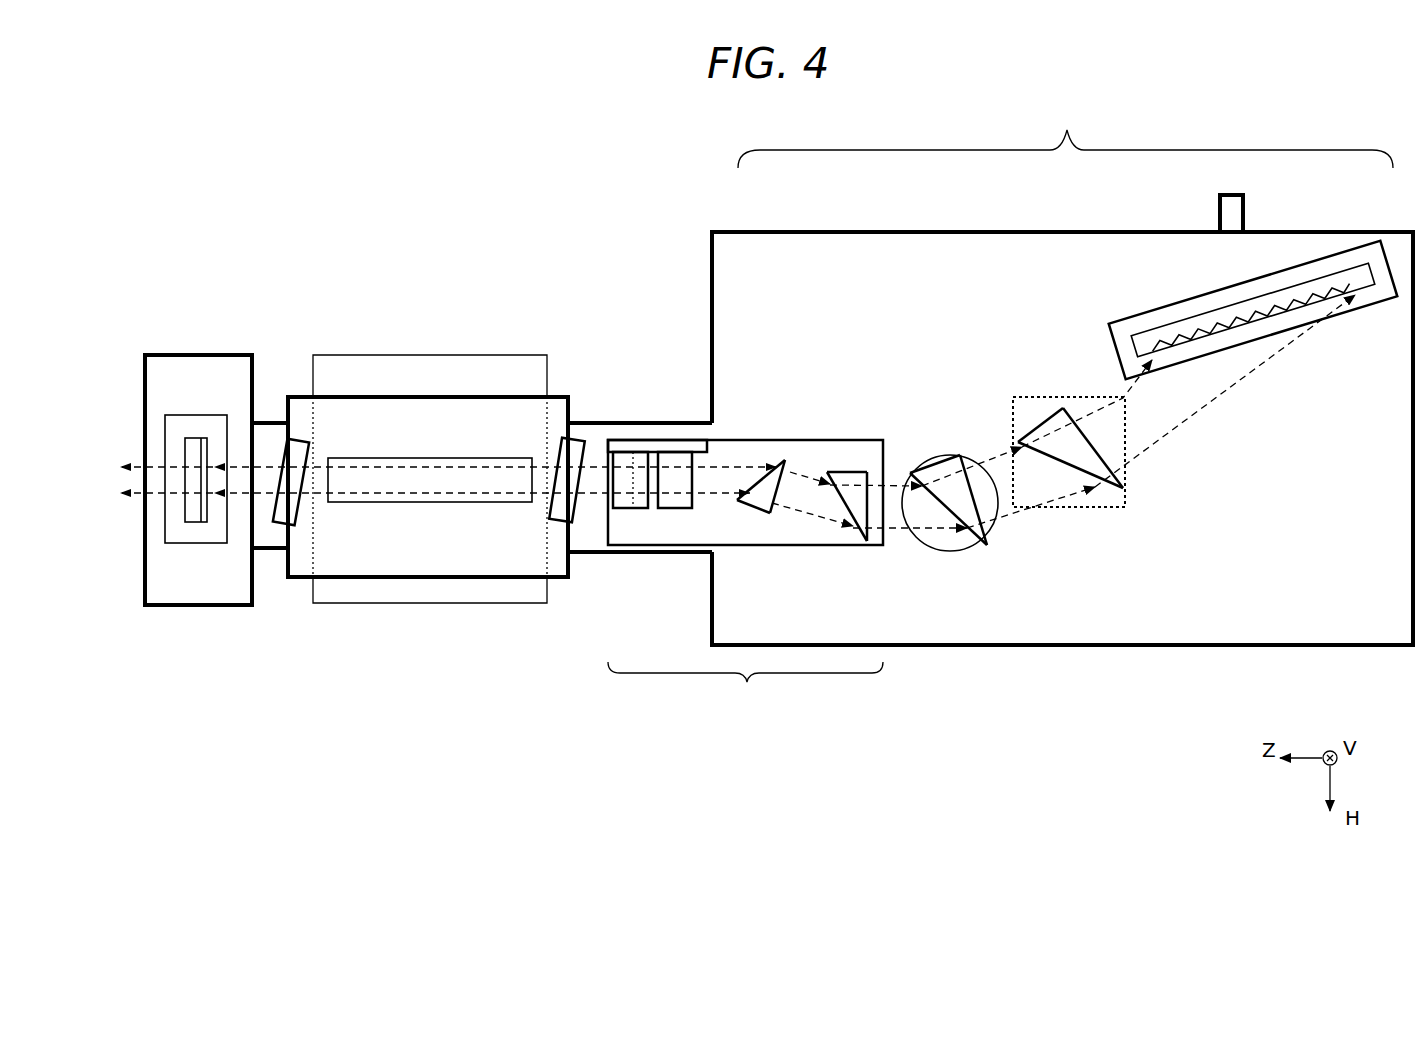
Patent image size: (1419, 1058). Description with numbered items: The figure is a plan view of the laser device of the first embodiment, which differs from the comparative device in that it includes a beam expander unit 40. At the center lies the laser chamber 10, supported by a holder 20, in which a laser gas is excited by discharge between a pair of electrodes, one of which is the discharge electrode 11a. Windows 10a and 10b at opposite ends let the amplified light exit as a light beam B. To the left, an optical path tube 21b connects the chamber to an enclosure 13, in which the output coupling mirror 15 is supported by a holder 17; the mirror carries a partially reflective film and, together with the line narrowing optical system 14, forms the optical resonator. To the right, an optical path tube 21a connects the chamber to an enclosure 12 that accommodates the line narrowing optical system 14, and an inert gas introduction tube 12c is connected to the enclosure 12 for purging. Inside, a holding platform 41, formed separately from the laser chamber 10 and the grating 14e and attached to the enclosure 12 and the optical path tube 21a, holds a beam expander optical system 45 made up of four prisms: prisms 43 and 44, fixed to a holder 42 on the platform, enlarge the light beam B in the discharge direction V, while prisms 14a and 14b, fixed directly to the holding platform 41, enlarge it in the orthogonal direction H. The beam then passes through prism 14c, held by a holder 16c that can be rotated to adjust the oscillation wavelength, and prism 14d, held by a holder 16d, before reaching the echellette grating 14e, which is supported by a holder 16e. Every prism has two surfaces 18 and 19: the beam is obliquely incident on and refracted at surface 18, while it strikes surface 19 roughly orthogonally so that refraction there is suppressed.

The laser chamber 10 is at (322, 396).
The window 10a is at (548, 506).
The window 10b is at (311, 445).
The discharge electrode 11a is at (423, 442).
The enclosure 12 is at (720, 229).
The inert gas introduction tube 12c is at (1245, 218).
The enclosure 13 is at (205, 355).
The line narrowing optical system 14 is at (1065, 135).
The prism 14a is at (785, 460).
The prism 14b is at (850, 472).
The prism 14c is at (940, 455).
The prism 14d is at (1065, 400).
The grating 14e is at (1150, 325).
The output coupling mirror 15 is at (193, 523).
The holder 16c is at (930, 552).
The holder 16d is at (1093, 507).
The holder 16e is at (1280, 340).
The holder 17 is at (182, 543).
The surface 18 is at (780, 455).
The surface 19 is at (797, 457).
The holder 20 is at (422, 605).
The optical path tube 21a is at (648, 552).
The optical path tube 21b is at (275, 550).
The beam expander unit 40 is at (789, 742).
The holding platform 41 is at (790, 547).
The holder 42 is at (690, 445).
The prism 43 is at (625, 462).
The prism 44 is at (670, 462).
The beam expander optical system 45 is at (781, 687).
The light beam B is at (584, 505).